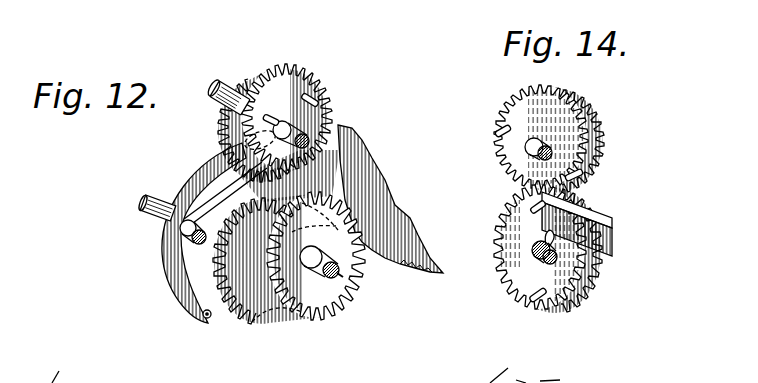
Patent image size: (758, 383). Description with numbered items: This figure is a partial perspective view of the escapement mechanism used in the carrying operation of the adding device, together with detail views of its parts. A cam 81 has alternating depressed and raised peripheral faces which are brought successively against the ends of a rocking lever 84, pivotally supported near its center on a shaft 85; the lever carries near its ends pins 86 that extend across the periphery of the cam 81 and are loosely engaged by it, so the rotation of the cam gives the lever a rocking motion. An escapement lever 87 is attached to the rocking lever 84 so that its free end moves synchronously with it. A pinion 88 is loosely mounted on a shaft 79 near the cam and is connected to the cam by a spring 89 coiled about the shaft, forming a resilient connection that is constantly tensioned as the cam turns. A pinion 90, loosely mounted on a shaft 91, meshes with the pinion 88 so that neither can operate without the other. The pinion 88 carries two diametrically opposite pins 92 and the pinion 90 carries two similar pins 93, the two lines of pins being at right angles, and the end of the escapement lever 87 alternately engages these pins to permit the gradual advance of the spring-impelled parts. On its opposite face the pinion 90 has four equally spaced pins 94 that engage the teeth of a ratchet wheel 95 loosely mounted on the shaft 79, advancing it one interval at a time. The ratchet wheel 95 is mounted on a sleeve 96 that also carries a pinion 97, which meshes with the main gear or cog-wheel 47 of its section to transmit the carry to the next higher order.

In FIG. 12, the gear or cog-wheel 47 is at (412, 244).
In FIG. 12, the shaft 79 is at (342, 273).
In FIG. 12, the cam 81 is at (205, 268).
In FIG. 12, the rocking lever 84 is at (212, 257).
In FIG. 12, the shaft 85 is at (160, 200).
In FIG. 12, the pins 86 is at (207, 319).
In FIG. 12, the escapement lever 87 is at (181, 226).
In FIG. 14, the escapement lever 87 is at (612, 233).
In FIG. 14, the pinion 88 is at (574, 270).
In FIG. 14, the spring 89 is at (540, 258).
In FIG. 12, the pinion 90 is at (297, 86).
In FIG. 14, the pinion 90 is at (556, 124).
In FIG. 12, the shaft 91 is at (222, 84).
In FIG. 14, the shaft 91 is at (527, 147).
In FIG. 14, the pins 92 is at (533, 210).
In FIG. 14, the pins 93 is at (496, 131).
In FIG. 12, the extending pins 94 is at (280, 122).
In FIG. 12, the ratchet wheel 95 is at (270, 321).
In FIG. 12, the sleeve 96 is at (314, 278).
In FIG. 12, the pinion 97 is at (318, 238).